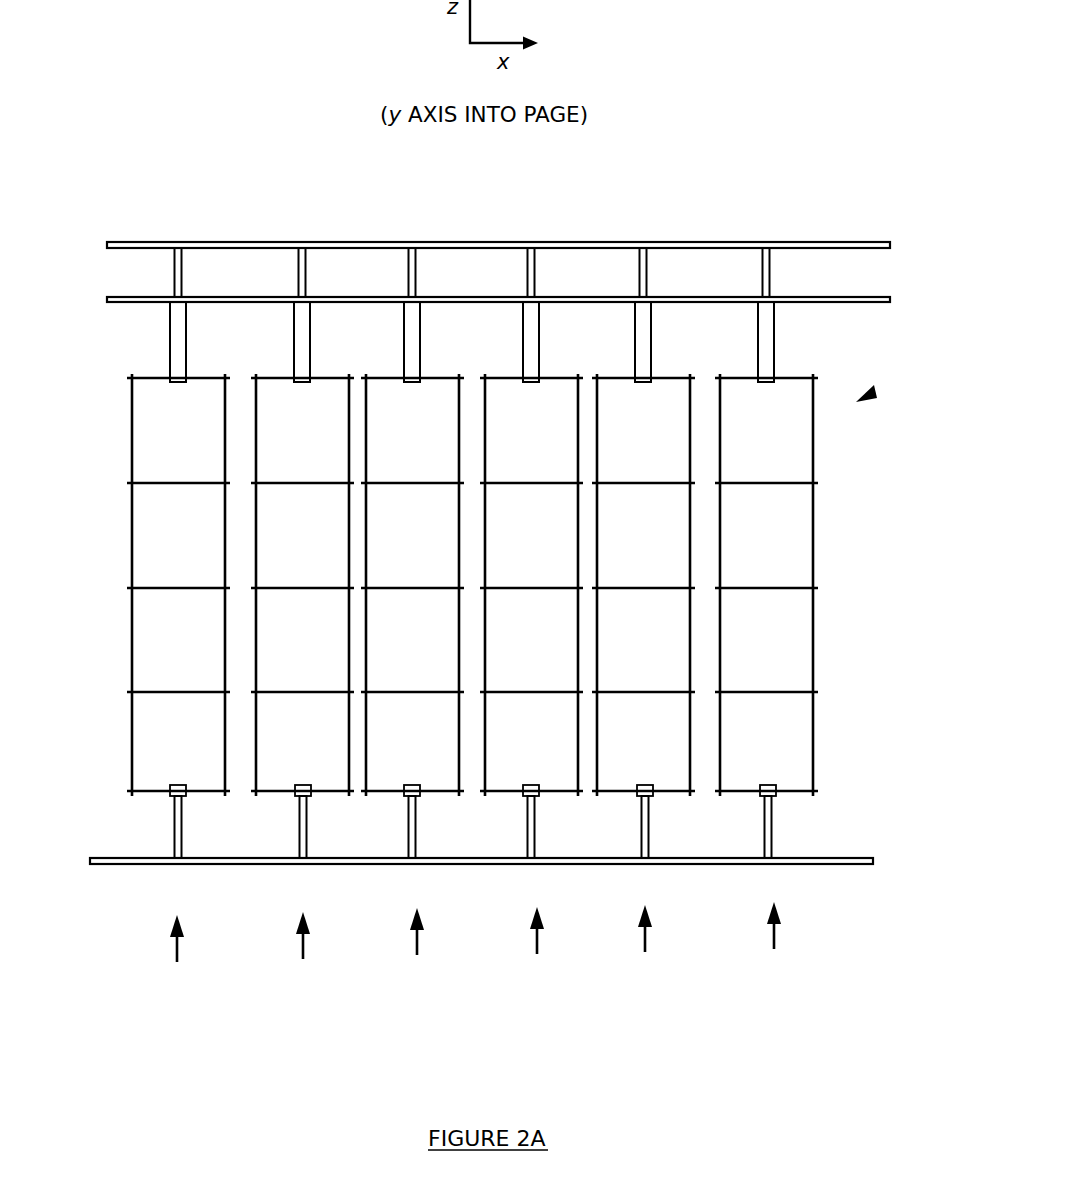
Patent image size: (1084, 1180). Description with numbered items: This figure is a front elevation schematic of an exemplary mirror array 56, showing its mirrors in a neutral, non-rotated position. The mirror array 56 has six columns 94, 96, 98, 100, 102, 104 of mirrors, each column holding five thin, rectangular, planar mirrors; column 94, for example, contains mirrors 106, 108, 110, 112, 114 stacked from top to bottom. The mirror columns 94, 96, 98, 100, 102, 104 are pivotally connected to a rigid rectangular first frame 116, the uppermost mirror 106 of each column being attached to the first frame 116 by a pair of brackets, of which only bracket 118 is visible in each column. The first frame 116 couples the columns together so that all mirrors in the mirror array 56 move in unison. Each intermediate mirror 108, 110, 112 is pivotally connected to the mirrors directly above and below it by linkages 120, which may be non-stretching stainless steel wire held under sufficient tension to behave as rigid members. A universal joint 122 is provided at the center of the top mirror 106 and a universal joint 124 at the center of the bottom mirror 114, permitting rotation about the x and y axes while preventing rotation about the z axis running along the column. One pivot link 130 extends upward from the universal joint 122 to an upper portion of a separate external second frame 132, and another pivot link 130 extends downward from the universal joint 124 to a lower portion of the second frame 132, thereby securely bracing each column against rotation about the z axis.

The mirror array 56 is at (874, 394).
The first column of mirrors 94 is at (177, 962).
The second column of mirrors 96 is at (303, 959).
The third column of mirrors 98 is at (417, 955).
The fourth column of mirrors 100 is at (537, 954).
The fifth column of mirrors 102 is at (645, 952).
The sixth column of mirrors 104 is at (774, 949).
The uppermost mirror 106 is at (130, 378).
The intermediate mirror 108 is at (130, 483).
The intermediate mirror 110 is at (130, 588).
The intermediate mirror 112 is at (130, 692).
The bottom mirror 114 is at (130, 791).
The first frame 116 is at (157, 293).
The bracket 118 is at (169, 312).
The linkage 120 is at (224, 439).
The universal joint 122 is at (190, 386).
The universal joint 124 is at (187, 796).
The pivot link 130 is at (181, 267).
The second frame 132 is at (128, 242).